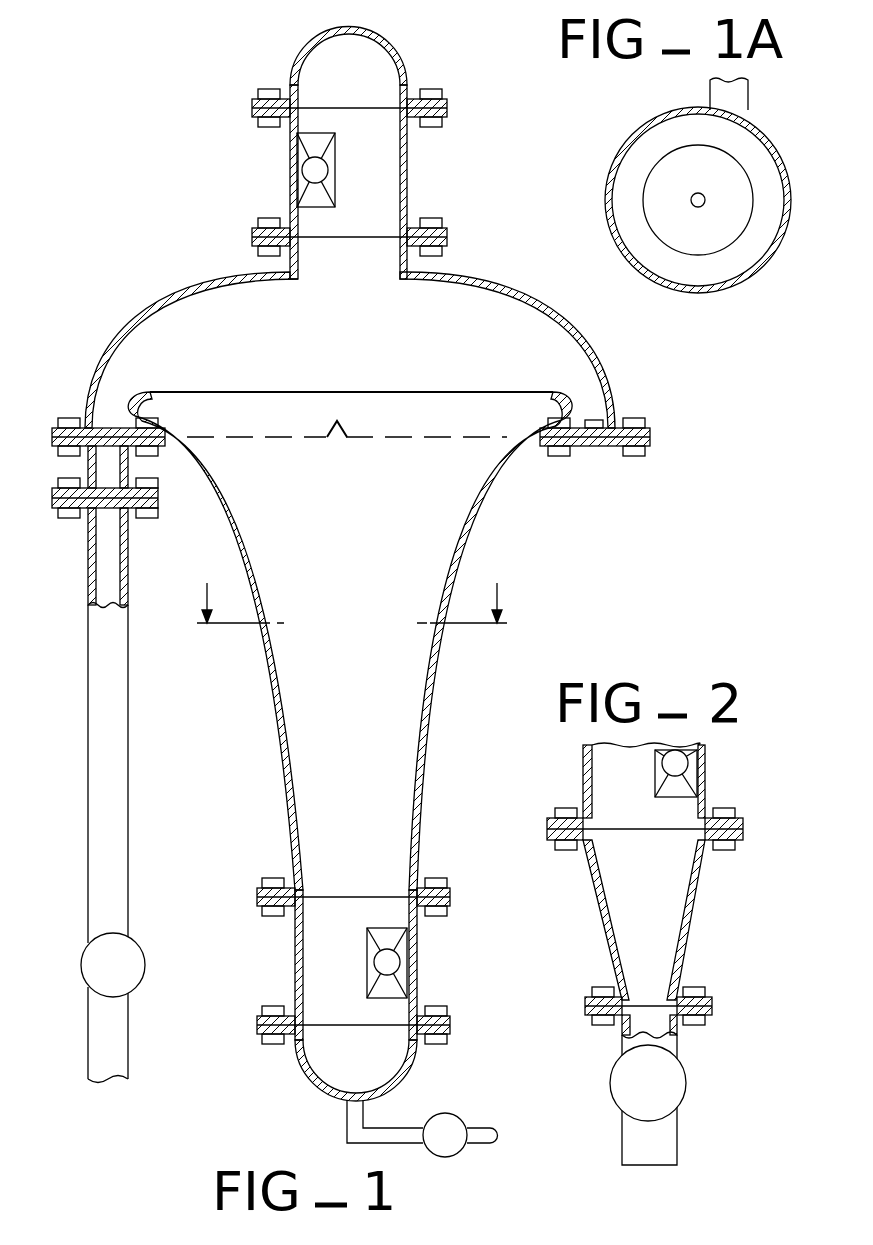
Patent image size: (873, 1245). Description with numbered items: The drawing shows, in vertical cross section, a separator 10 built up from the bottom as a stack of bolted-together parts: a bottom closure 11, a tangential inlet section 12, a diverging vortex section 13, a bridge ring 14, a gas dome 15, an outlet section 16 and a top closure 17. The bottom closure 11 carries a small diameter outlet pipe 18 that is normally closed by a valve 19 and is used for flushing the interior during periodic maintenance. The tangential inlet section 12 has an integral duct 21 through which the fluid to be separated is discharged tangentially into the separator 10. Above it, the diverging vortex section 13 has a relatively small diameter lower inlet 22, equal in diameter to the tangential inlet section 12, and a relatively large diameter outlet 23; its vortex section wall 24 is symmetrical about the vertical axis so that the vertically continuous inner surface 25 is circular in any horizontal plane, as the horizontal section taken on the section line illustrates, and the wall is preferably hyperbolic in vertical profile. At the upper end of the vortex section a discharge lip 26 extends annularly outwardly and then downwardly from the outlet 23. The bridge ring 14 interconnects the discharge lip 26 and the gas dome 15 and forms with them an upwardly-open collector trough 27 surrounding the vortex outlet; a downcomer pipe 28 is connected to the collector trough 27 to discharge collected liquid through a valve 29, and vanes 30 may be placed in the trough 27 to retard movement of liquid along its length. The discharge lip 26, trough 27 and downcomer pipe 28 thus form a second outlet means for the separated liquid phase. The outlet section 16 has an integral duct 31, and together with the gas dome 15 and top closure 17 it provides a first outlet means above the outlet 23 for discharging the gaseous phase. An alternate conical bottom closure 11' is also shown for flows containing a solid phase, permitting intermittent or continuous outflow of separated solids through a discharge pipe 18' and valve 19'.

In FIG. 1, the separator 10 is at (153, 294).
In FIG. 1, the bottom closure 11 is at (330, 1079).
In FIG. 2, the conical bottom closure 11' is at (675, 920).
In FIG. 1, the tangential inlet section 12 is at (295, 965).
In FIG. 1A, the tangential inlet section 12 is at (652, 205).
In FIG. 2, the tangential inlet section 12 is at (583, 768).
In FIG. 1, the diverging vortex section 13 is at (279, 743).
In FIG. 1A, the diverging vortex section 13 is at (777, 255).
In FIG. 1, the bridge ring 14 is at (157, 446).
In FIG. 1, the gas dome 15 is at (112, 340).
In FIG. 1, the outlet section 16 is at (410, 160).
In FIG. 1, the top closure 17 is at (395, 48).
In FIG. 1, the outlet pipe 18 is at (384, 1125).
In FIG. 1A, the outlet pipe 18 is at (702, 222).
In FIG. 2, the discharge pipe 18' is at (691, 1090).
In FIG. 1, the valve 19 is at (456, 1159).
In FIG. 2, the valve 19' is at (686, 1083).
In FIG. 1, the duct 21 is at (367, 970).
In FIG. 1A, the duct 21 is at (740, 100).
In FIG. 2, the duct 21 is at (655, 775).
In FIG. 1, the lower inlet 22 is at (345, 895).
In FIG. 1, the outlet 23 is at (407, 392).
In FIG. 1, the vortex section wall 24 is at (437, 655).
In FIG. 1A, the vortex section wall 24 is at (618, 152).
In FIG. 1, the inner surface 25 is at (438, 612).
In FIG. 1A, the inner surface 25 is at (667, 128).
In FIG. 1, the discharge lip 26 is at (582, 397).
In FIG. 1, the collector trough 27 is at (103, 420).
In FIG. 1, the downcomer pipe 28 is at (90, 673).
In FIG. 1, the valve 29 is at (88, 946).
In FIG. 1, the vane 30 is at (328, 441).
In FIG. 1, the duct 31 is at (335, 183).